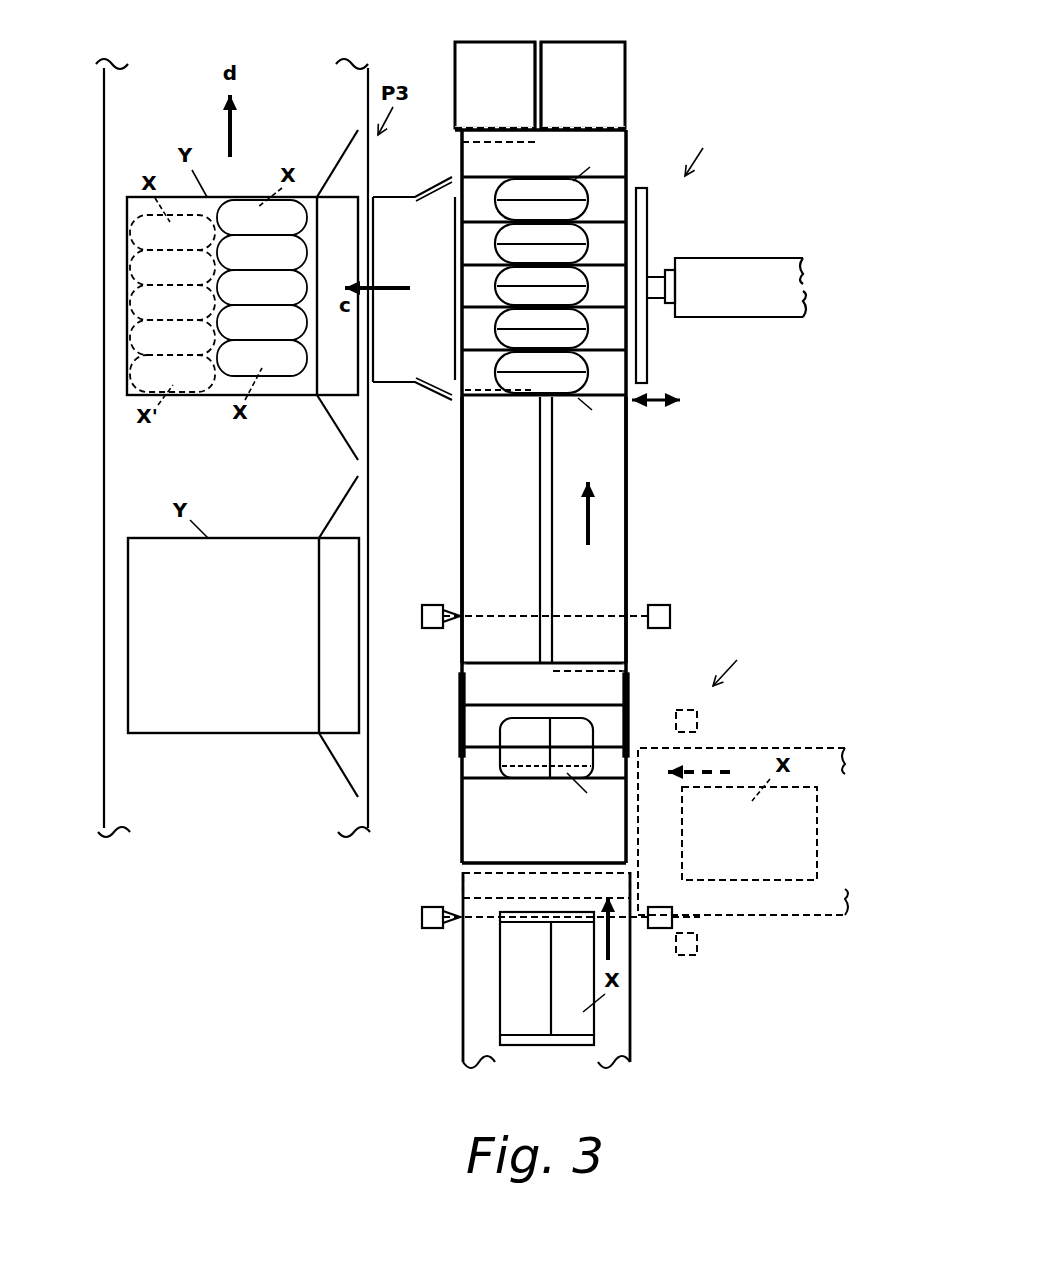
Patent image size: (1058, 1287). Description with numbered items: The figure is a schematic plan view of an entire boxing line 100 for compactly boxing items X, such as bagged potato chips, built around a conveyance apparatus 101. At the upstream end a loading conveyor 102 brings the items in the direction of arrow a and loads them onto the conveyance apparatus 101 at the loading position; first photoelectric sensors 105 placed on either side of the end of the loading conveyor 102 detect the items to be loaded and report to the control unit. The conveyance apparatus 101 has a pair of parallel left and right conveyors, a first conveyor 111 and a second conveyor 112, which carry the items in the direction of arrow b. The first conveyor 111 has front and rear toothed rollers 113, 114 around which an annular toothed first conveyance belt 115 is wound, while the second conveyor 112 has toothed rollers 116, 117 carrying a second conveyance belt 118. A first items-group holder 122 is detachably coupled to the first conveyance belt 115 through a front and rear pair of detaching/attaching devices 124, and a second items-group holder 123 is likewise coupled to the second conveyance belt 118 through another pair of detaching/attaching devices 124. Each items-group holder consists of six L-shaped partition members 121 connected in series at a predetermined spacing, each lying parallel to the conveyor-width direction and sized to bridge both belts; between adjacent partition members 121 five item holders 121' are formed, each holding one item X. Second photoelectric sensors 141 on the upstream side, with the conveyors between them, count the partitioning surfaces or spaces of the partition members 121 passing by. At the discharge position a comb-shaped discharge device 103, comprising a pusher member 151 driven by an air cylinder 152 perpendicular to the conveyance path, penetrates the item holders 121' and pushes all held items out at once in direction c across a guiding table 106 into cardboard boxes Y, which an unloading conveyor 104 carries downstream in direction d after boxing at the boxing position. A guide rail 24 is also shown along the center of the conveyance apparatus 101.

The boxing line 100 is at (718, 64).
The conveyance apparatus 101 is at (712, 447).
The loading conveyor 102 is at (462, 1002).
The discharge device 103 is at (700, 258).
The unloading conveyor 104 is at (372, 597).
The first photoelectric sensors 105 is at (433, 906).
The guiding table 106 is at (402, 195).
The first conveyor 111 is at (461, 489).
The second conveyor 112 is at (632, 489).
The toothed roller 113 is at (462, 82).
The toothed roller 114 is at (462, 719).
The first conveyance belt 115 is at (473, 541).
The toothed roller 116 is at (628, 74).
The toothed roller 117 is at (633, 689).
The second conveyance belt 118 is at (618, 541).
The partition member 121 is at (543, 475).
The item holder 121' is at (546, 478).
The first items-group holder 122 is at (557, 130).
The second items-group holder 123 is at (487, 661).
The detaching/attaching device 124 is at (482, 140).
The second photoelectric sensors 141 is at (664, 606).
The pusher member 151 is at (642, 352).
The air cylinder 152 is at (735, 306).
The guide rail 24 is at (488, 400).